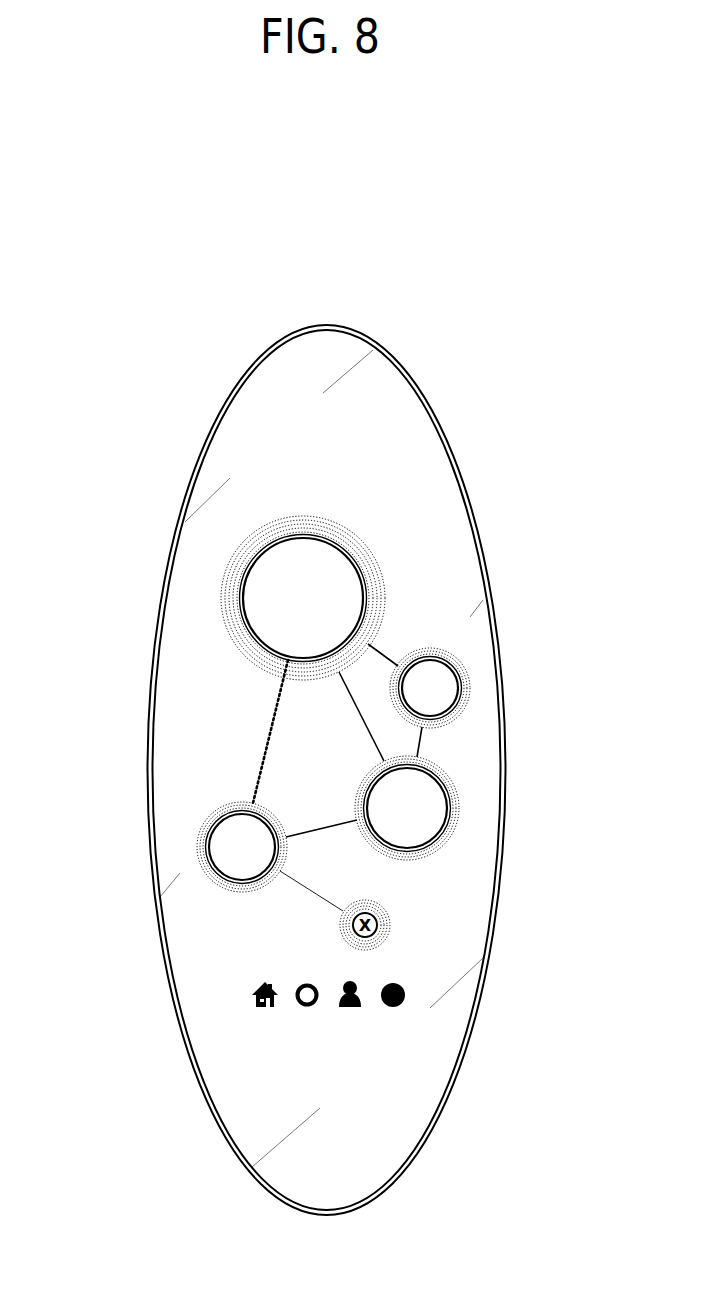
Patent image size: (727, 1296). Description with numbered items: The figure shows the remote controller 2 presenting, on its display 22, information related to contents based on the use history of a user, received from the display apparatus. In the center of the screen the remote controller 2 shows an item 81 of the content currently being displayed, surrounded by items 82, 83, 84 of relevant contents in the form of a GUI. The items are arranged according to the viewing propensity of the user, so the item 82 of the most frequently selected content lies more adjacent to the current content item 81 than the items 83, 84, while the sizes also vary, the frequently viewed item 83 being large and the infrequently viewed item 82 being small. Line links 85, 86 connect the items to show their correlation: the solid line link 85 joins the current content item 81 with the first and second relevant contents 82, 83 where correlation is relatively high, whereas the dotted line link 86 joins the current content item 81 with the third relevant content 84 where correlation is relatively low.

The remote controller 2 is at (186, 394).
The display 22 is at (195, 658).
The item of the currently displayed content 81 is at (223, 590).
The item of the first relevant content 82 is at (460, 663).
The item of the second relevant content 83 is at (452, 827).
The item of the third relevant content 84 is at (202, 858).
The line link 85 is at (380, 733).
The line link 86 is at (267, 747).